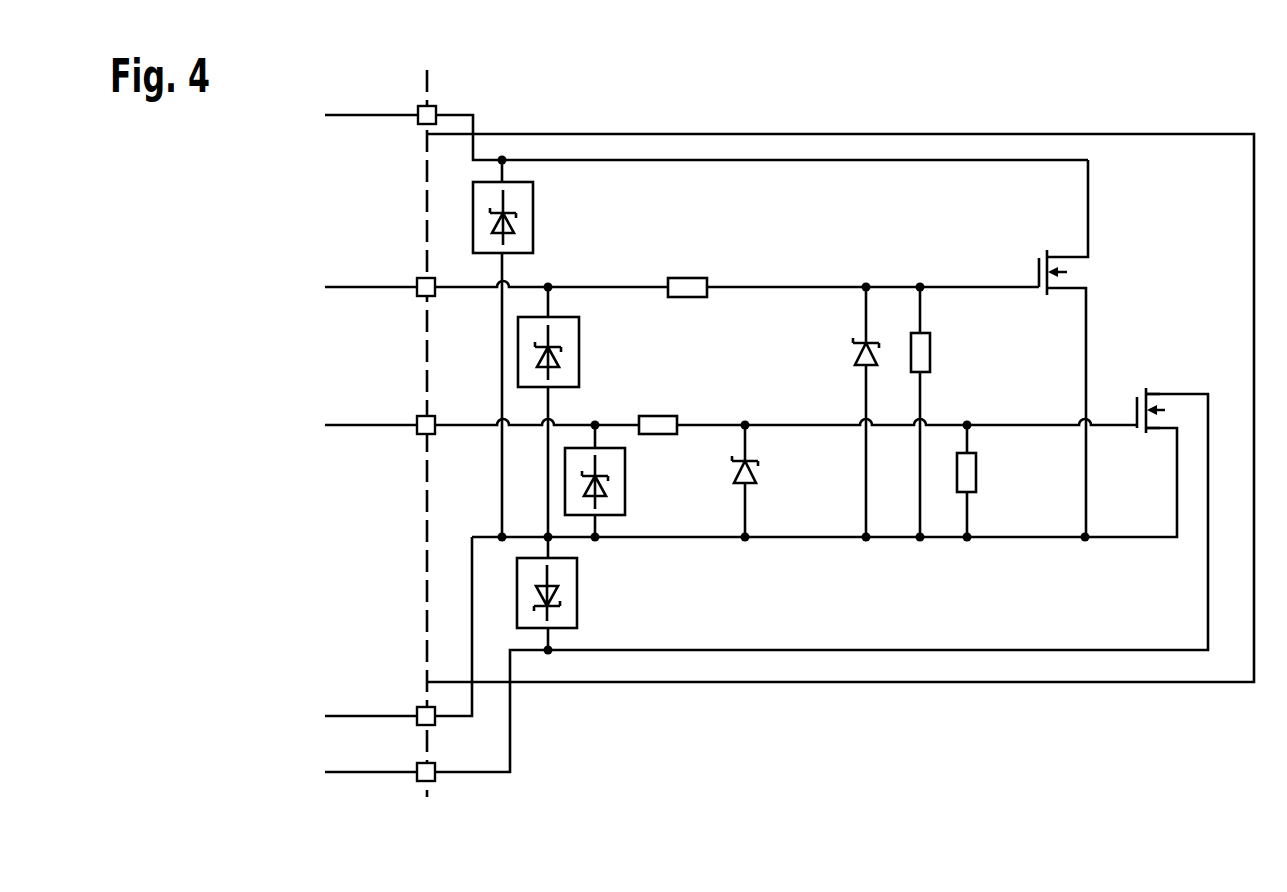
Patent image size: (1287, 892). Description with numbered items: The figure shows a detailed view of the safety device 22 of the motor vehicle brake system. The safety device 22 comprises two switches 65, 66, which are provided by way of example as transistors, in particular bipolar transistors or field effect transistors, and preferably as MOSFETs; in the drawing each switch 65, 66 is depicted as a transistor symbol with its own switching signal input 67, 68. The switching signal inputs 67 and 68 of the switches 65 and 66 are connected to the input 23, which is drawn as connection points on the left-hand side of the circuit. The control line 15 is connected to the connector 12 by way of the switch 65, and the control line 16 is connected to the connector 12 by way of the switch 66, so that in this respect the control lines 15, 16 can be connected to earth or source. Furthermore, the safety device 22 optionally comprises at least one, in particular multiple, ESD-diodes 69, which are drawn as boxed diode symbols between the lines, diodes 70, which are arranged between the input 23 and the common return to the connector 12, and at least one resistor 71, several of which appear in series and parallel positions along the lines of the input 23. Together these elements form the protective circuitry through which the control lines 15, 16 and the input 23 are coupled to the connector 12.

The connector 12 is at (346, 714).
The control line 15 is at (347, 112).
The control line 16 is at (345, 777).
The safety device 22 is at (916, 104).
The input 23 is at (348, 285).
The switch 65 is at (1092, 277).
The switch 66 is at (1128, 392).
The switching signal input 67 is at (1038, 285).
The switching signal input 68 is at (1141, 435).
The ESD-diode 69 is at (533, 218).
The diode 70 is at (853, 352).
The resistor 71 is at (690, 277).